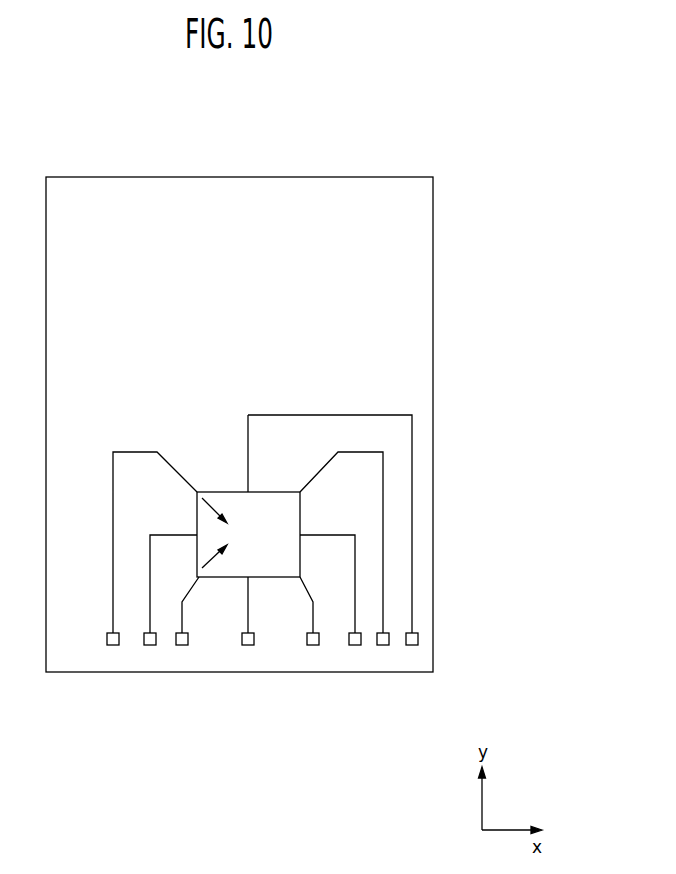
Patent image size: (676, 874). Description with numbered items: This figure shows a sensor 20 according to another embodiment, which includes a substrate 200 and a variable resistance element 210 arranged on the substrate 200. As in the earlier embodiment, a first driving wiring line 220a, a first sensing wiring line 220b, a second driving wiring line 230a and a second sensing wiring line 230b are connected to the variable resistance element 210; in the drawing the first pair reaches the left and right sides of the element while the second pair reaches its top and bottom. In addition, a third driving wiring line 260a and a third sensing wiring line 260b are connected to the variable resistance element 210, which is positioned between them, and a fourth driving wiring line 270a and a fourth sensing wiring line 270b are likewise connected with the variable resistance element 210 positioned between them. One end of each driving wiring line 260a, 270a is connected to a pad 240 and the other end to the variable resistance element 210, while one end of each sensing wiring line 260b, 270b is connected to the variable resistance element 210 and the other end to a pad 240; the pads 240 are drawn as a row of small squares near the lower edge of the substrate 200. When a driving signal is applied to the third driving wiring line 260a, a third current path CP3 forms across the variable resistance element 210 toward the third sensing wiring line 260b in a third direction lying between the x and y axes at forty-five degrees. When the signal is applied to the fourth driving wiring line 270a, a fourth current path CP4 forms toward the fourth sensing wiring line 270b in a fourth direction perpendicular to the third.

The sensor 20 is at (386, 124).
The substrate 200 is at (433, 263).
The variable resistance element 210 is at (255, 491).
The third current path CP3 is at (232, 556).
The fourth current path CP4 is at (232, 511).
The first driving wiring line 220a is at (165, 535).
The first sensing wiring line 220b is at (315, 535).
The second driving wiring line 230a is at (248, 463).
The second sensing wiring line 230b is at (238, 630).
The third driving wiring line 260a is at (178, 630).
The third sensing wiring line 260b is at (328, 462).
The fourth driving wiring line 270a is at (170, 465).
The fourth sensing wiring line 270b is at (308, 630).
The pad 240 is at (150, 645).